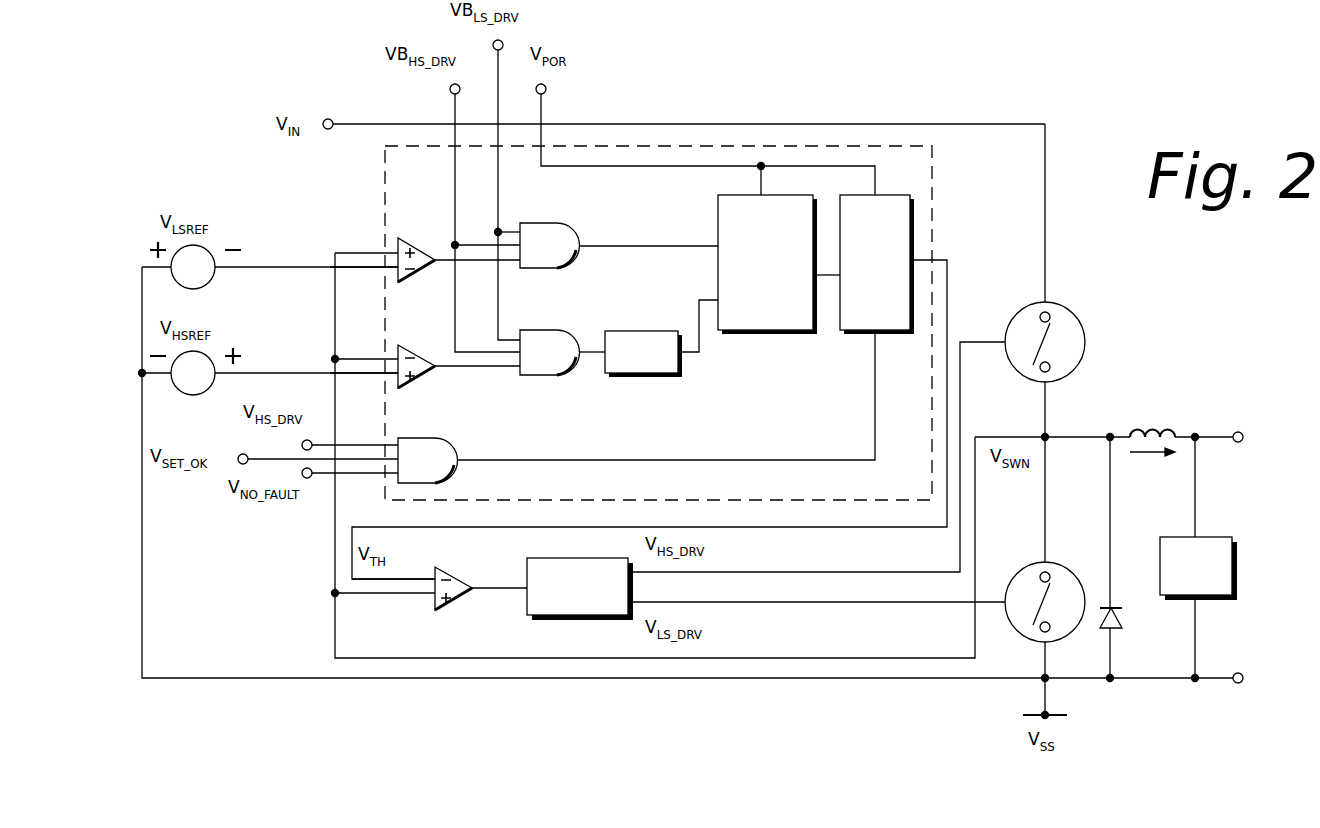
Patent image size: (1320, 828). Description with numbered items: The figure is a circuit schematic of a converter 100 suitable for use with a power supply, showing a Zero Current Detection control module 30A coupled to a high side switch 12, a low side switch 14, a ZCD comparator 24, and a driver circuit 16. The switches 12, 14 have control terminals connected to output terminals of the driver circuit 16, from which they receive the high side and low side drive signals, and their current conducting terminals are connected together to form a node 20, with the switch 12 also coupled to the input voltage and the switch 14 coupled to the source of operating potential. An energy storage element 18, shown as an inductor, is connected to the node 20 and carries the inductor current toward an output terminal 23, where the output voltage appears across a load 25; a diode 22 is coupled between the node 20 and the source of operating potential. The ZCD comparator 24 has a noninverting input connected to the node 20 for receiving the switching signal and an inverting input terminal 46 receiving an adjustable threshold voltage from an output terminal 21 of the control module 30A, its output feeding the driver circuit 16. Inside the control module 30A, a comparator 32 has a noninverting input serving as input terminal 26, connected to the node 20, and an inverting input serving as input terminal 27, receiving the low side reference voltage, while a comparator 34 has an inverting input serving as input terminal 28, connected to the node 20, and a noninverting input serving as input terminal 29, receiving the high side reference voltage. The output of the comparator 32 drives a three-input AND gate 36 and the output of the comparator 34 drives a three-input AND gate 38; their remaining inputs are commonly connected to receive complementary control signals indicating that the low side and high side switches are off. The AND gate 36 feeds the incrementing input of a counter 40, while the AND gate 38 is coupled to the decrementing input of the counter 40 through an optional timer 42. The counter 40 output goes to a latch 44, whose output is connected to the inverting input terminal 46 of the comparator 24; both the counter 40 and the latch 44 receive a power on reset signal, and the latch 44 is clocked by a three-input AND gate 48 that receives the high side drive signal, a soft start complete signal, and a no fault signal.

The converter 100 is at (1213, 267).
The switch 12 is at (1080, 326).
The switch 14 is at (1018, 576).
The driver circuit 16 is at (555, 558).
The energy storage element 18 is at (1162, 423).
The node 20 is at (1042, 436).
The output terminal 21 is at (947, 262).
The diode 22 is at (1122, 609).
The output terminal 23 is at (1238, 444).
The Zero Current Detection comparator 24 is at (455, 601).
The load 25 is at (1236, 565).
The input terminal 26 is at (385, 250).
The input terminal 27 is at (385, 270).
The input terminal 28 is at (385, 356).
The input terminal 29 is at (385, 376).
The ZCD control module 30A is at (932, 190).
The comparator 32 is at (420, 279).
The comparator 34 is at (426, 380).
The three-input AND gate 36 is at (563, 225).
The three-input AND gate 38 is at (538, 378).
The counter 40 is at (762, 338).
The timer 42 is at (637, 331).
The latch 44 is at (862, 338).
The inverting input terminal 46 is at (435, 572).
The three-input AND gate 48 is at (430, 438).